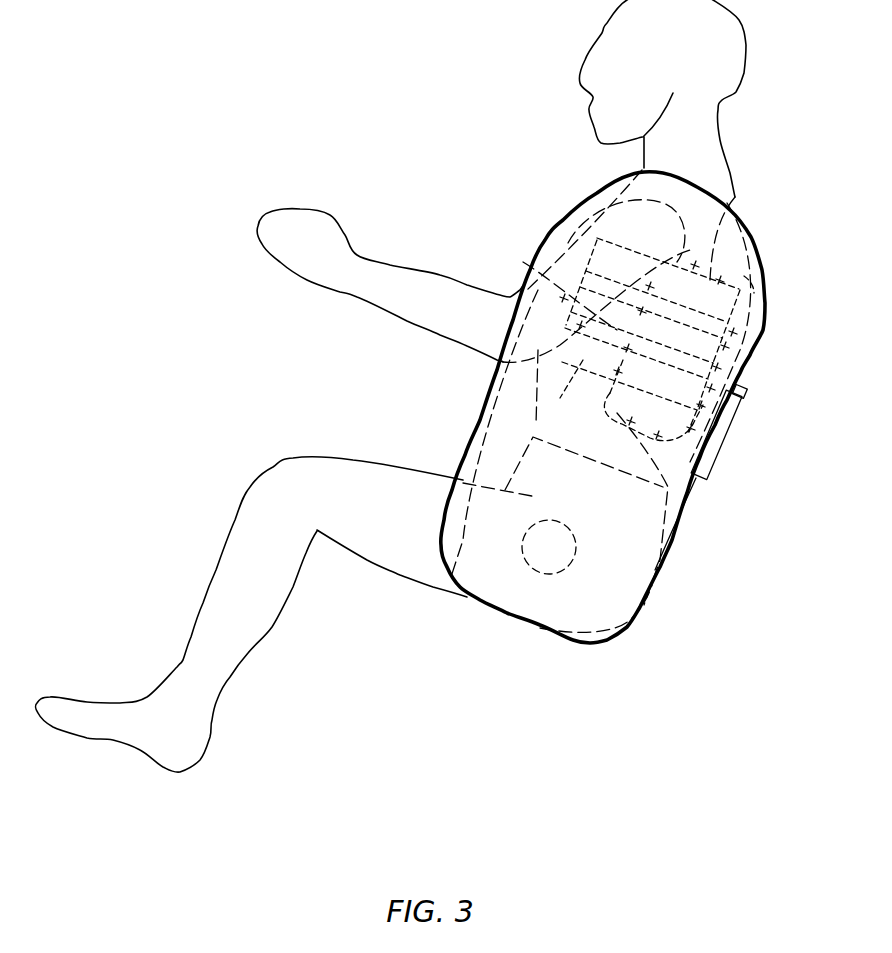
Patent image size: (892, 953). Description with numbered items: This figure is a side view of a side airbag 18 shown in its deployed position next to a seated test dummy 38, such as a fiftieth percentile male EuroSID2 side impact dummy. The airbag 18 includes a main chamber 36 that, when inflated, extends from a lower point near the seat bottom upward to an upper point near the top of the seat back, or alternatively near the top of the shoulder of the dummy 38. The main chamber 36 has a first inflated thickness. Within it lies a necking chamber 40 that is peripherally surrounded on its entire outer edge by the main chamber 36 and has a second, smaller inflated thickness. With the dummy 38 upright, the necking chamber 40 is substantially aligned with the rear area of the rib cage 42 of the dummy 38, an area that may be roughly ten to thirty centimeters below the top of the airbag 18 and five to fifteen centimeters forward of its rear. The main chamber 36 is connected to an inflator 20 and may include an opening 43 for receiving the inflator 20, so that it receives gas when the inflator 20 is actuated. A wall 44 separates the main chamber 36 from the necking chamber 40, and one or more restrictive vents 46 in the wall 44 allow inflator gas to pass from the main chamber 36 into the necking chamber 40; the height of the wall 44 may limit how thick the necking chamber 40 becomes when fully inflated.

The airbag 18 is at (765, 240).
The inflator 20 is at (720, 463).
The main chamber 36 is at (601, 526).
The test dummy 38 is at (747, 45).
The necking chamber 40 is at (625, 420).
The rib cage 42 is at (540, 393).
The opening 43 is at (731, 392).
The wall 44 is at (755, 283).
The restrictive vent 46 is at (733, 200).